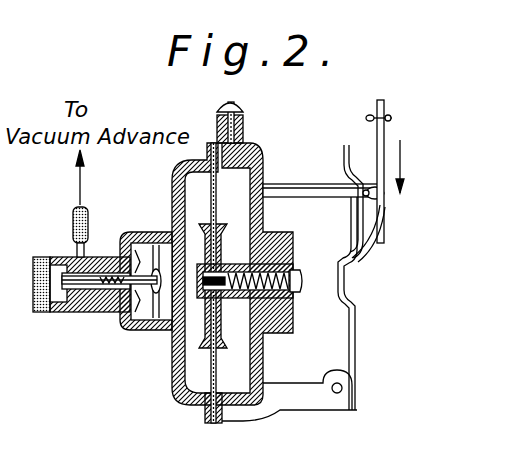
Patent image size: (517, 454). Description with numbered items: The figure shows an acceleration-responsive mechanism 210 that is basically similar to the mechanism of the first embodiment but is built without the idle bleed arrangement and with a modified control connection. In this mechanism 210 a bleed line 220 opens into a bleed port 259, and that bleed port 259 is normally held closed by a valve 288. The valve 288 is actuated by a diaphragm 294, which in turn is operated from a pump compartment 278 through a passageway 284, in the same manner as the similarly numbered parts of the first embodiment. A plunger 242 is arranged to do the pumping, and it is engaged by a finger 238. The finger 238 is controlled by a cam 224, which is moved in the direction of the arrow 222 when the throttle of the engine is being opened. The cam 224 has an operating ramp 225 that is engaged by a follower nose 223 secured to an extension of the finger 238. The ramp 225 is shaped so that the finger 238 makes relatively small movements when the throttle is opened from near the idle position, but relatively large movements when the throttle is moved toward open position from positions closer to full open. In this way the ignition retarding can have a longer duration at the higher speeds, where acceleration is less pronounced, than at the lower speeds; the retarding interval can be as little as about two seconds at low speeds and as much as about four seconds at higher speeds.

The acceleration-responsive mechanism 210 is at (124, 352).
The bleed line 220 is at (88, 227).
The arrow 222 is at (403, 170).
The follower nose 223 is at (363, 228).
The cam 224 is at (346, 157).
The operating ramp 225 is at (352, 186).
The finger 238 is at (342, 286).
The plunger 242 is at (327, 256).
The bleed port 259 is at (77, 312).
The pump compartment 278 is at (200, 180).
The passageway 284 is at (156, 306).
The valve 288 is at (95, 268).
The diaphragm 294 is at (143, 253).